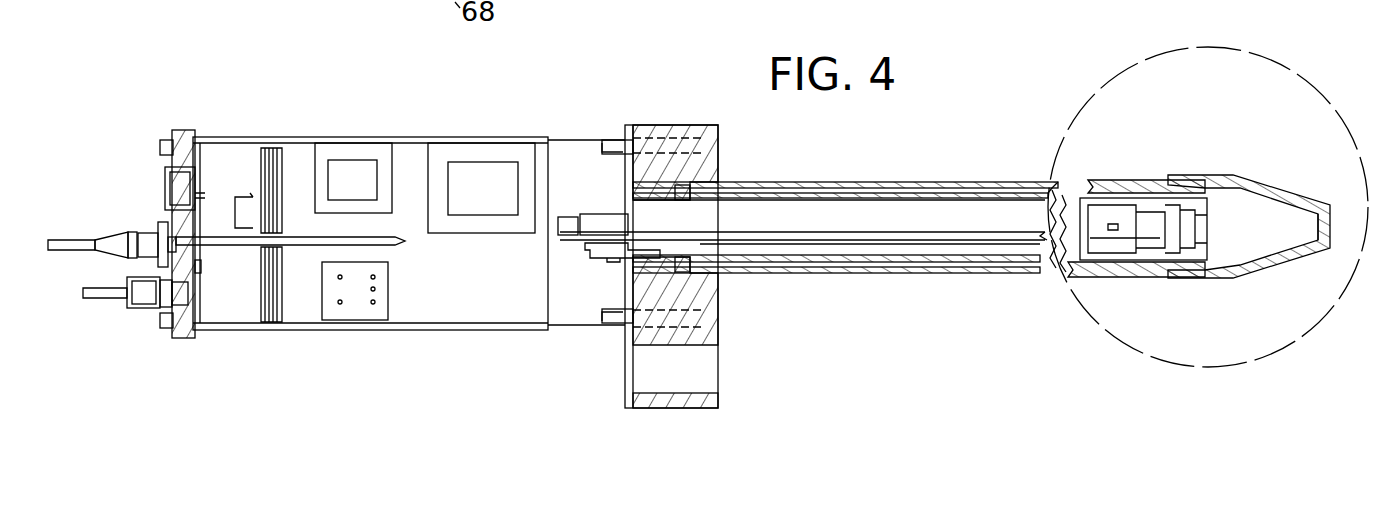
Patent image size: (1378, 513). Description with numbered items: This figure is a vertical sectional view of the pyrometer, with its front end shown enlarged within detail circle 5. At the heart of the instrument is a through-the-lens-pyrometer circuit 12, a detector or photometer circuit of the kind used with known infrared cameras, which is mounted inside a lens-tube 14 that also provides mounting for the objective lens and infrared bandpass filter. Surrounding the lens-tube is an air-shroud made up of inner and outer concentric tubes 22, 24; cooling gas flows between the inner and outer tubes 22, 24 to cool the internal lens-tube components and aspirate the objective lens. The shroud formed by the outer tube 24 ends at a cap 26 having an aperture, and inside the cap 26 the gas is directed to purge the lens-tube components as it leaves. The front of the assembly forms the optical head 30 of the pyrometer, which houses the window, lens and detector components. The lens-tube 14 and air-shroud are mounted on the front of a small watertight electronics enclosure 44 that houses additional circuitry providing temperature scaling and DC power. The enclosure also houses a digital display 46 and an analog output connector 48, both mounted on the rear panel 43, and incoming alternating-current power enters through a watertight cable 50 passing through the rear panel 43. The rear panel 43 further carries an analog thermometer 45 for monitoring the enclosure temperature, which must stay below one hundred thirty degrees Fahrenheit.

The detail circle / probe tip region 5 is at (1238, 46).
The through-the-lens-pyrometer circuit 12 is at (927, 235).
The lens-tube 14 is at (930, 276).
The inner tube 22 is at (778, 190).
The outer tube 24 is at (880, 182).
The cap 26 is at (1228, 278).
The optical head 30 is at (1237, 210).
The rear panel 43 is at (178, 131).
The electronics enclosure 44 is at (453, 329).
The analog thermometer 45 is at (240, 246).
The digital display 46 is at (163, 197).
The analog output connector 48 is at (113, 240).
The water tight cable 50 is at (102, 297).